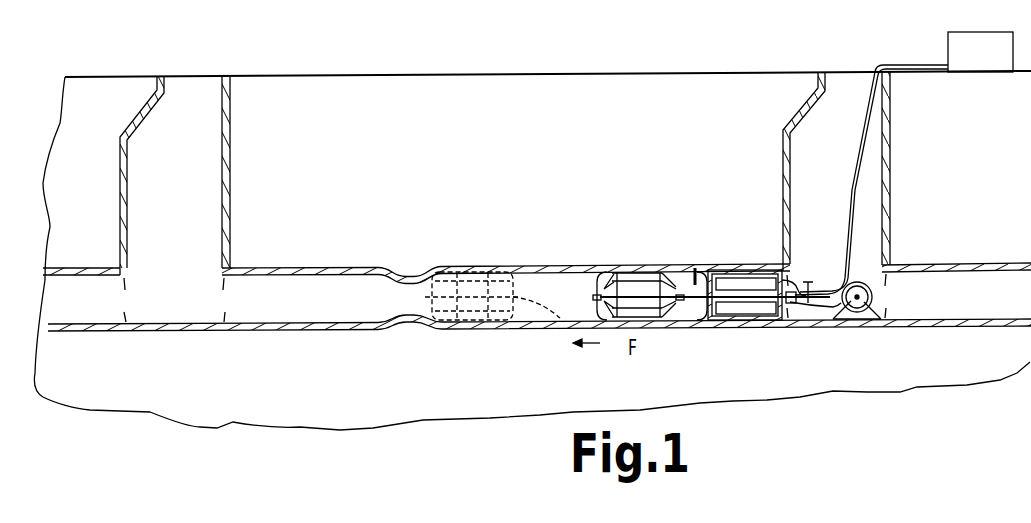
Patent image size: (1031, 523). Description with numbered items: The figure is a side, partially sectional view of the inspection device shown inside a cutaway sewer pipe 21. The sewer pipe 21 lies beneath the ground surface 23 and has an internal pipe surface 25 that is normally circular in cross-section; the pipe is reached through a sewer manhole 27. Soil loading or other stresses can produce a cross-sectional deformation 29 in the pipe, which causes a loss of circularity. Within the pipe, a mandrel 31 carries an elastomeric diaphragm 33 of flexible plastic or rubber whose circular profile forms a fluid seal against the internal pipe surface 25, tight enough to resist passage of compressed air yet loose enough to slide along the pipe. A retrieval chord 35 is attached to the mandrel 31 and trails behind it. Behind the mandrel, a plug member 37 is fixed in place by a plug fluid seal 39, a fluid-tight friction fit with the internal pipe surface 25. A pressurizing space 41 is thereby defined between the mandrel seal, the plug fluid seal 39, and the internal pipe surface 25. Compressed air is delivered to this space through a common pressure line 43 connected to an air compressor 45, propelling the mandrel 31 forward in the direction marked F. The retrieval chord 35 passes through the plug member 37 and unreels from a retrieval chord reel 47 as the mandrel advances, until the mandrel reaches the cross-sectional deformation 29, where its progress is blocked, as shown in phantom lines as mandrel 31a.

The sewer pipe 21 is at (509, 267).
The ground surface 23 is at (623, 72).
The internal pipe surface 25 is at (562, 272).
The sewer manhole 27 is at (849, 72).
The cross-sectional deformation 29 is at (410, 272).
The mandrel 31 is at (630, 280).
The mandrel in phantom lines 31a is at (513, 330).
The elastomeric diaphragm 33 is at (596, 299).
The retrieval chord 35 is at (698, 312).
The plug member 37 is at (789, 322).
The plug fluid seal 39 is at (753, 270).
The pressurizing space 41 is at (693, 262).
The common pressure line 43 is at (857, 161).
The air compressor 45 is at (992, 63).
The retrieval chord reel 47 is at (874, 299).